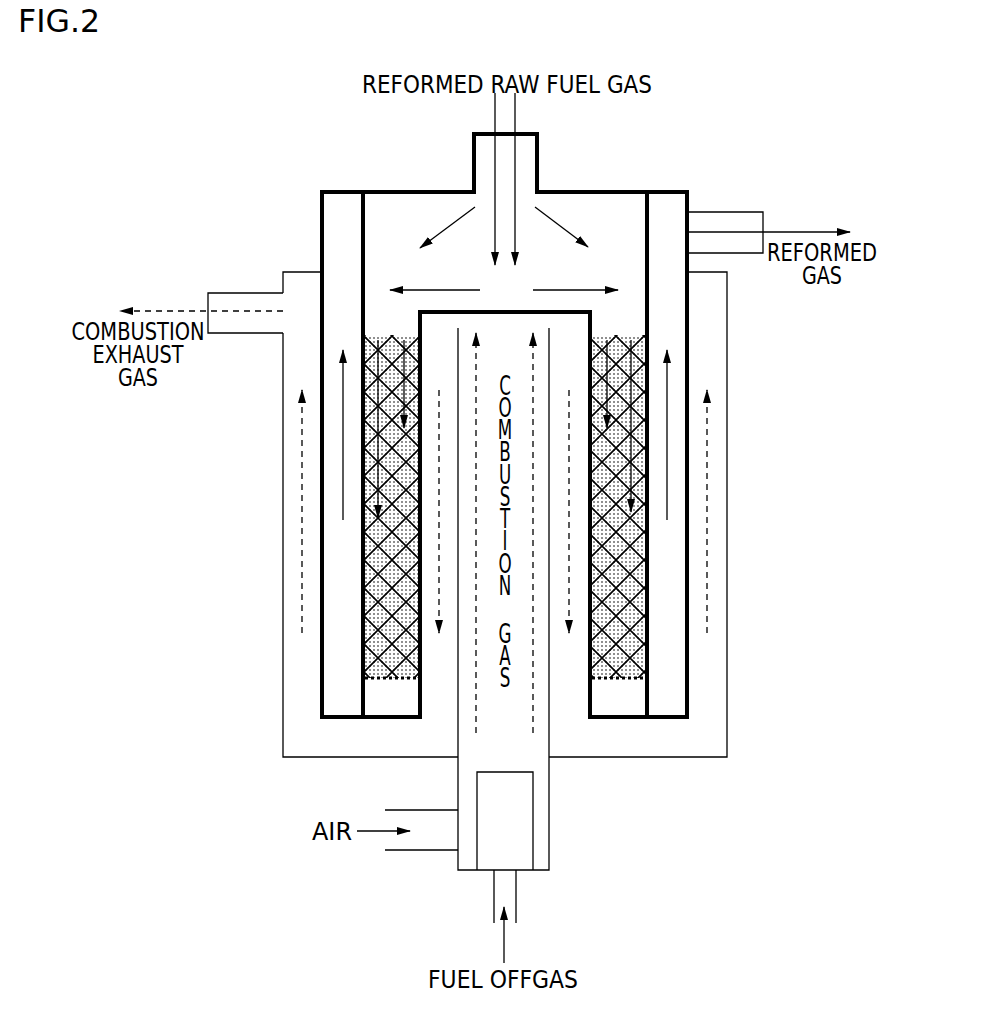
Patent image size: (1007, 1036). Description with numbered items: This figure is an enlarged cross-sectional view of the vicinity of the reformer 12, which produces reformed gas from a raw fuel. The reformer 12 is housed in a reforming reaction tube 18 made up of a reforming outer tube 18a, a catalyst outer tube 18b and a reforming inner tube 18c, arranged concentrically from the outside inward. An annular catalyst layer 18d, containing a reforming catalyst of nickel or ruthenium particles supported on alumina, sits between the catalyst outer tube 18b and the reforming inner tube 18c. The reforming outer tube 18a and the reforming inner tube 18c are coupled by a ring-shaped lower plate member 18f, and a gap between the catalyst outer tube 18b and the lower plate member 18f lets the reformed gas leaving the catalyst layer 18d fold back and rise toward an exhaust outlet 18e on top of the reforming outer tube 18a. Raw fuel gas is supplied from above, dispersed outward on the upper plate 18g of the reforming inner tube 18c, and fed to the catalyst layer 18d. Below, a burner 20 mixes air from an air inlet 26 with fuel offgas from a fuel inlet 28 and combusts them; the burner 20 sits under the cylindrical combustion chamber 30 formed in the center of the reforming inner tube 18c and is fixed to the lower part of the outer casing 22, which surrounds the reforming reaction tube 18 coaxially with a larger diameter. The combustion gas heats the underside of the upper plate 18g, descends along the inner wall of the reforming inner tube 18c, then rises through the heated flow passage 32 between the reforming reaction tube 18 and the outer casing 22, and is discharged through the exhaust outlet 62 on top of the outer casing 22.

The reformer 12 is at (597, 275).
The reforming reaction tube 18 is at (700, 376).
The reforming outer tube 18a is at (687, 545).
The catalyst outer tube 18b is at (648, 578).
The reforming inner tube 18c is at (646, 617).
The catalyst layer 18d is at (646, 660).
The exhaust outlet 18e is at (728, 212).
The lower plate member 18f is at (665, 720).
The upper plate 18g is at (522, 312).
The burner 20 is at (508, 843).
The outer casing 22 is at (727, 478).
The air inlet 26 is at (428, 810).
The fuel inlet 28 is at (494, 897).
The combustion chamber 30 is at (507, 735).
The heated flow passage 32 is at (290, 543).
The exhaust outlet 62 is at (243, 293).